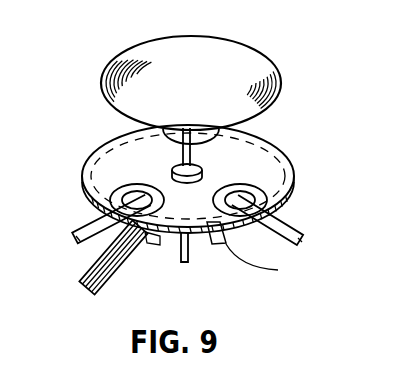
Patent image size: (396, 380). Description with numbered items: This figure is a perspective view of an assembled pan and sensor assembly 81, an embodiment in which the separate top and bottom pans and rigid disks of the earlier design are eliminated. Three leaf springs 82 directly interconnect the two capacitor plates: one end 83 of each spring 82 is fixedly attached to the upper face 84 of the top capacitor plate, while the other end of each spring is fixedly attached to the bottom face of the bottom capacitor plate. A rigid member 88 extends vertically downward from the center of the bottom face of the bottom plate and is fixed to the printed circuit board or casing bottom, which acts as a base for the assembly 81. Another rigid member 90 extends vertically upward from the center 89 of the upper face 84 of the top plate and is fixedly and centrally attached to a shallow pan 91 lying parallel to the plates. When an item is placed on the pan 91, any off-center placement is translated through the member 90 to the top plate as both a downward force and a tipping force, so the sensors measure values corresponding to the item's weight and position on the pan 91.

The pan and sensor assembly 81 is at (341, 112).
The leaf springs 82 is at (82, 221).
The end of spring 83 is at (166, 139).
The upper face 84 is at (287, 158).
The rigid member 88 is at (190, 254).
The center 89 is at (203, 175).
The rigid member 90 is at (181, 171).
The shallow pan 91 is at (272, 63).